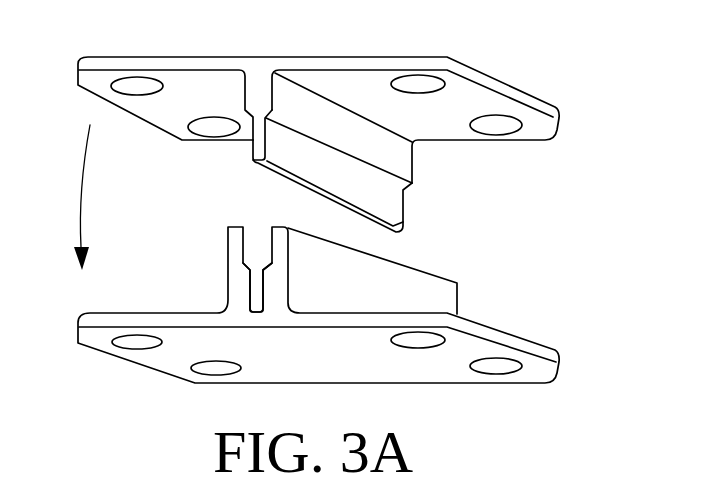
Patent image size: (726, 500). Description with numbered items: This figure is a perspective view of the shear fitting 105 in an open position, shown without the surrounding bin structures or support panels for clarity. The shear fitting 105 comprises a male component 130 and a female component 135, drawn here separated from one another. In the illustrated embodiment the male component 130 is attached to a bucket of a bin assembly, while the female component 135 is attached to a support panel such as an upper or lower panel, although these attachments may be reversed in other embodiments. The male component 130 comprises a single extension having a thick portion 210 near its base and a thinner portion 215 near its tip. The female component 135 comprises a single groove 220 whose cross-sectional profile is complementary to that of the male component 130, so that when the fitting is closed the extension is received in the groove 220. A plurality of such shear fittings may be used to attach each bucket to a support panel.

The shear fitting 105 is at (537, 50).
The male component 130 is at (113, 56).
The female component 135 is at (178, 372).
The thick portion 210 is at (256, 96).
The thinner portion 215 is at (253, 154).
The groove 220 is at (259, 245).